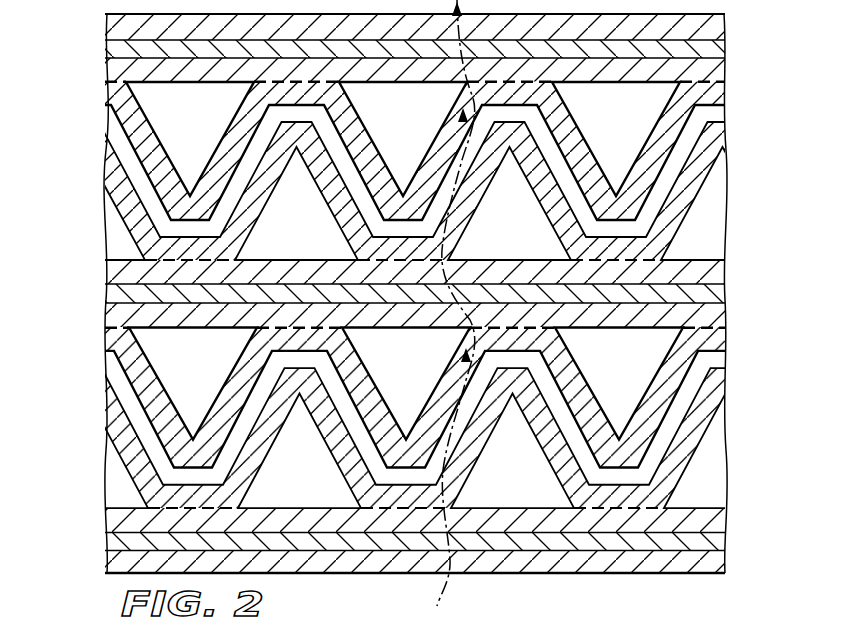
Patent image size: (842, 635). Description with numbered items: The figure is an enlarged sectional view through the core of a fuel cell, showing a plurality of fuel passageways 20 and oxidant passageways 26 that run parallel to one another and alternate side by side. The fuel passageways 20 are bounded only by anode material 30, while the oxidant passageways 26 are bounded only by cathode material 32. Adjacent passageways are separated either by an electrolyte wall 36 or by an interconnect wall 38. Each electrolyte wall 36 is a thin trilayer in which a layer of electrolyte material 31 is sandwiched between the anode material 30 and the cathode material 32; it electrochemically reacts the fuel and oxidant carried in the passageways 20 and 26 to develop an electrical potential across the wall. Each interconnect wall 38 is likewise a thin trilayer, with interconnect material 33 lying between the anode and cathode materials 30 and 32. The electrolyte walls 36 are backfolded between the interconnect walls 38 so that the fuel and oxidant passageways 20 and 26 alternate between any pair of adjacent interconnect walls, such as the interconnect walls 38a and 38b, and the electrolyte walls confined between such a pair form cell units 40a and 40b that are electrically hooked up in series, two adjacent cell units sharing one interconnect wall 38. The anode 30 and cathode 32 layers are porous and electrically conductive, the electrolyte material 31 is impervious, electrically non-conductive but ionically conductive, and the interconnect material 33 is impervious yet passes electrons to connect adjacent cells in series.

The fuel passageways 20 is at (200, 130).
The oxidant passageways 26 is at (307, 220).
The anode material 30 is at (721, 72).
The electrolyte material 31 is at (724, 358).
The cathode material 32 is at (724, 32).
The interconnect material 33 is at (725, 50).
The electrolyte wall 36 is at (730, 95).
The interconnect wall 38 is at (741, 279).
The interconnect wall 38a is at (106, 286).
The interconnect wall 38b is at (100, 44).
The cell unit 40a is at (100, 295).
The cell unit 40b is at (100, 545).